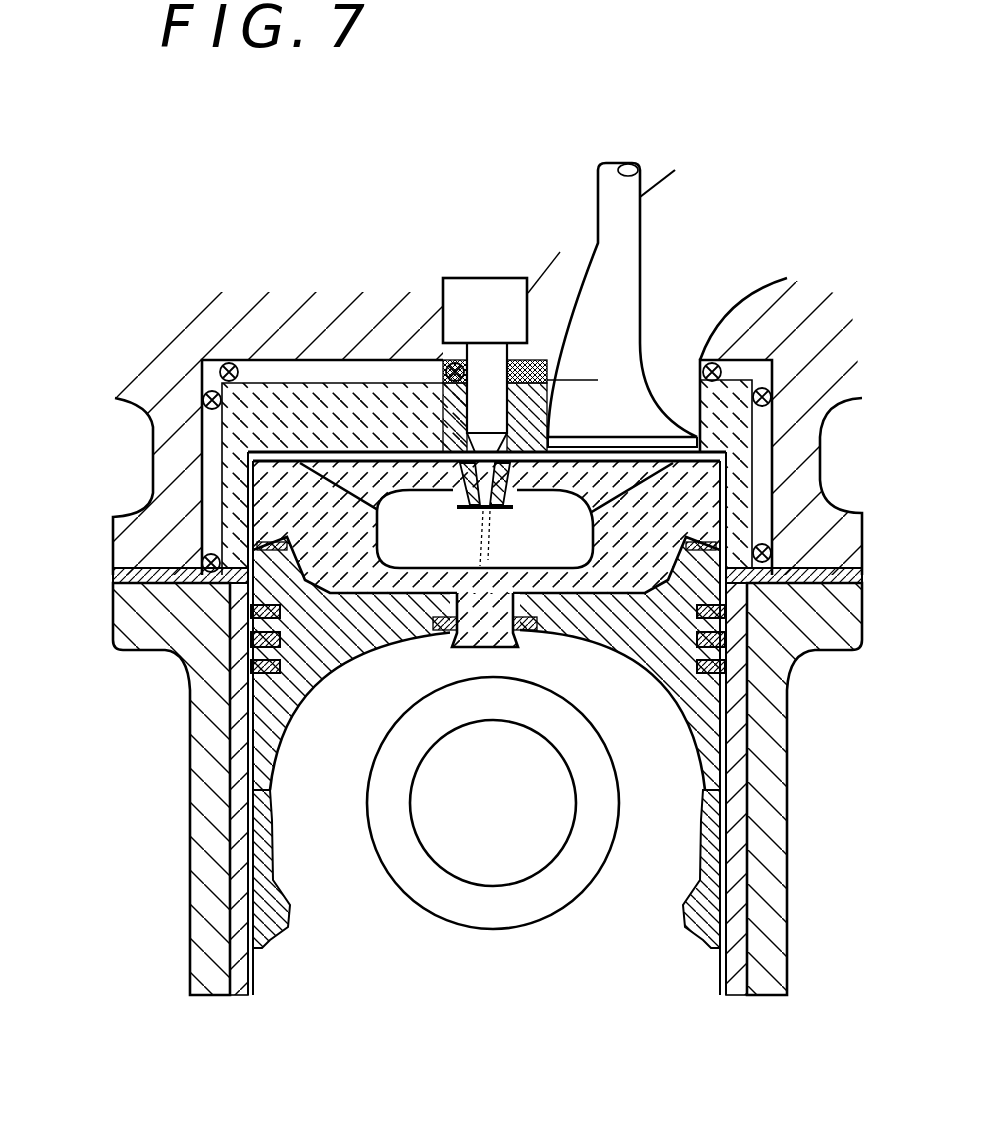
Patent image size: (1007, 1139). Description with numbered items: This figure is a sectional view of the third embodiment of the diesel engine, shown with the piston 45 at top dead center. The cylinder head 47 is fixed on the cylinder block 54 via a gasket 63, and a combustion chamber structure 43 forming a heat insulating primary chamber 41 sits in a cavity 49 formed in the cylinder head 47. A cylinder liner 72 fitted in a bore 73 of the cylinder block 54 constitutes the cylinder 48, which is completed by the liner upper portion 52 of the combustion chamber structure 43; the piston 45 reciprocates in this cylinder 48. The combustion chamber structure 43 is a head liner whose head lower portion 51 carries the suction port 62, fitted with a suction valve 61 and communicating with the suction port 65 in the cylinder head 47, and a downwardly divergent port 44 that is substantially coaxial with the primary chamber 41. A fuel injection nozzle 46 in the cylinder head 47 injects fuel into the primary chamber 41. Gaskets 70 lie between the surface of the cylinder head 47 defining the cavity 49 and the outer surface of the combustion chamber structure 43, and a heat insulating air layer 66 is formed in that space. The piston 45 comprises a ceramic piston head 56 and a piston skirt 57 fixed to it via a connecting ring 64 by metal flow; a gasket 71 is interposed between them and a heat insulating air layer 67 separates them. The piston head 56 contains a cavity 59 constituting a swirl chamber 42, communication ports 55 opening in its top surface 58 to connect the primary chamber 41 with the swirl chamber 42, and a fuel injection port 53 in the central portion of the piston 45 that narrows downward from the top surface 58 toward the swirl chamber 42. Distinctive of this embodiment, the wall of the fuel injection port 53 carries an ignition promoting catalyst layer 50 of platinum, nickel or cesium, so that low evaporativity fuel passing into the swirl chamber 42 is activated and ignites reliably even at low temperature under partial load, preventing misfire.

The primary chamber 41 is at (300, 465).
The swirl chamber 42 is at (399, 563).
The combustion chamber structure 43 is at (232, 475).
The downwardly divergent port 44 is at (430, 395).
The piston 45 is at (362, 672).
The fuel injection nozzle 46 is at (482, 360).
The cylinder head 47 is at (170, 503).
The cylinder 48 is at (257, 523).
The cavity 49 is at (765, 452).
The ignition promoting catalyst layer 50 is at (463, 514).
The head lower portion 51 is at (525, 413).
The liner upper portion 52 is at (735, 513).
The fuel injection port 53 is at (486, 527).
The cylinder block 54 is at (770, 747).
The communication ports 55 is at (235, 385).
The piston head 56 is at (206, 414).
The piston skirt 57 is at (292, 678).
The top surface 58 is at (567, 440).
The cavity 59 is at (397, 605).
The suction valve 61 is at (618, 410).
The suction port 62 is at (682, 400).
The gasket 63 is at (860, 574).
The connecting ring 64 is at (528, 633).
The suction port 65 is at (714, 248).
The heat insulating air layer 66 is at (329, 372).
The heat insulating air layer 67 is at (648, 645).
The gaskets 70 is at (230, 363).
The gasket 71 is at (276, 665).
The cylinder liner 72 is at (240, 814).
The bore 73 is at (240, 725).